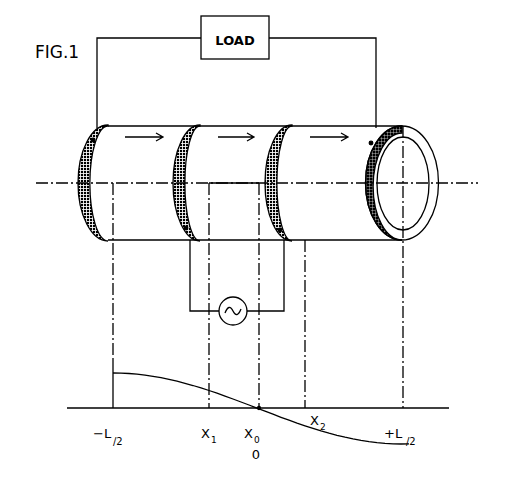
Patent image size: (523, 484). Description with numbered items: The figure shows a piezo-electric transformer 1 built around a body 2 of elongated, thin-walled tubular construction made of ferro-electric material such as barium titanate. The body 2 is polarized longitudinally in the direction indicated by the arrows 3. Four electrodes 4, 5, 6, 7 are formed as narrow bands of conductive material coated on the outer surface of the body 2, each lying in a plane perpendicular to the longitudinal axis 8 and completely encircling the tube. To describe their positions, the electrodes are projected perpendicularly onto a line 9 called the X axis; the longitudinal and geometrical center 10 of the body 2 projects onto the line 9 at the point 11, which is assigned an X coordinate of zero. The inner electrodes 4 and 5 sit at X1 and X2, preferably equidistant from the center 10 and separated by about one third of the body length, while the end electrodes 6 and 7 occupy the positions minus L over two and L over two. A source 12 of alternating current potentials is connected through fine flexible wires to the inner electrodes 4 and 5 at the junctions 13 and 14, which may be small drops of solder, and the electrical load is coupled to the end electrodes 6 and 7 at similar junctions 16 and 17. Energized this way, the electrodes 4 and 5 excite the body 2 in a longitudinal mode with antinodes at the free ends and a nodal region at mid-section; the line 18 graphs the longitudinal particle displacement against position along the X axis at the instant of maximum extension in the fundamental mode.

The piezo-electric transformer 1 is at (153, 116).
The body 2 is at (326, 129).
The arrows 3 is at (147, 139).
The electrode 4 is at (188, 130).
The electrode 5 is at (281, 132).
The electrode 6 is at (103, 127).
The electrode 7 is at (380, 130).
The longitudinal axis 8 is at (448, 185).
The line 9 is at (431, 408).
The center 10 is at (256, 198).
The point 11 is at (261, 408).
The source 12 is at (229, 326).
The junction 13 is at (185, 228).
The junction 14 is at (281, 230).
The junction 16 is at (93, 140).
The junction 17 is at (371, 143).
The line 18 is at (364, 442).